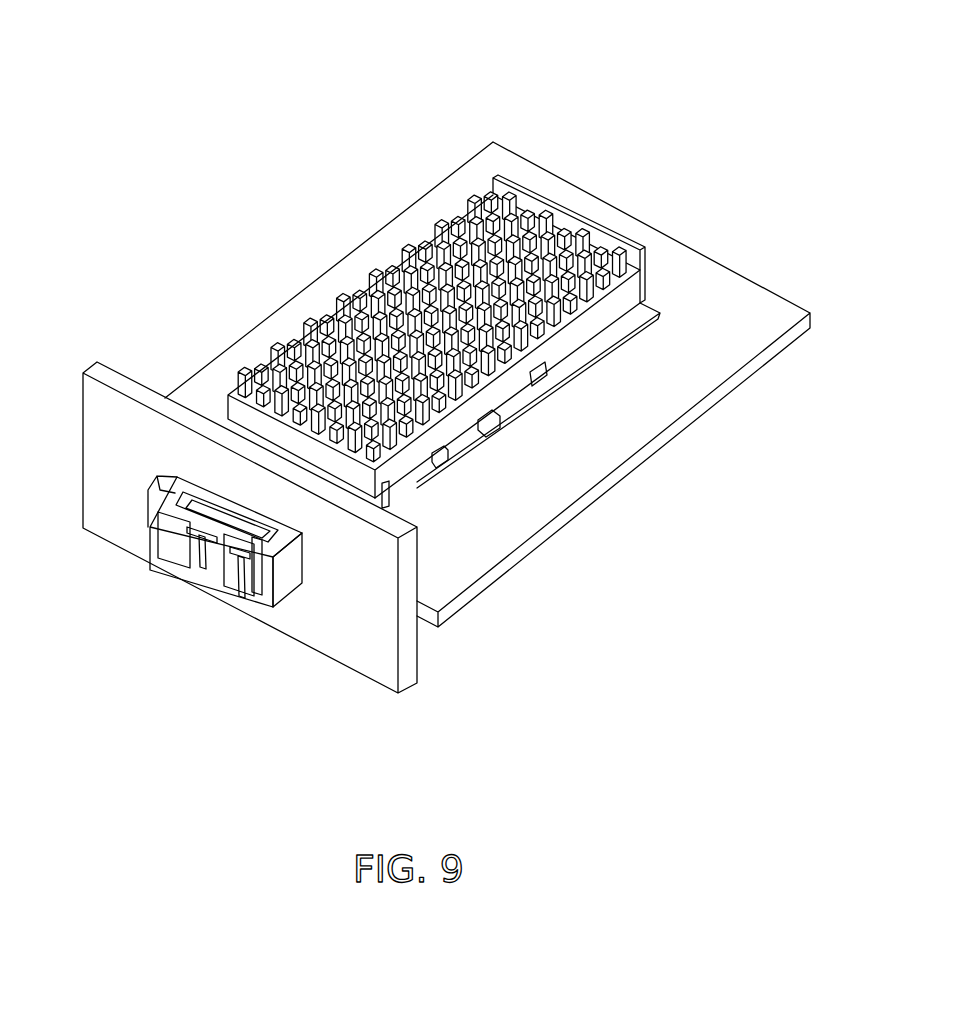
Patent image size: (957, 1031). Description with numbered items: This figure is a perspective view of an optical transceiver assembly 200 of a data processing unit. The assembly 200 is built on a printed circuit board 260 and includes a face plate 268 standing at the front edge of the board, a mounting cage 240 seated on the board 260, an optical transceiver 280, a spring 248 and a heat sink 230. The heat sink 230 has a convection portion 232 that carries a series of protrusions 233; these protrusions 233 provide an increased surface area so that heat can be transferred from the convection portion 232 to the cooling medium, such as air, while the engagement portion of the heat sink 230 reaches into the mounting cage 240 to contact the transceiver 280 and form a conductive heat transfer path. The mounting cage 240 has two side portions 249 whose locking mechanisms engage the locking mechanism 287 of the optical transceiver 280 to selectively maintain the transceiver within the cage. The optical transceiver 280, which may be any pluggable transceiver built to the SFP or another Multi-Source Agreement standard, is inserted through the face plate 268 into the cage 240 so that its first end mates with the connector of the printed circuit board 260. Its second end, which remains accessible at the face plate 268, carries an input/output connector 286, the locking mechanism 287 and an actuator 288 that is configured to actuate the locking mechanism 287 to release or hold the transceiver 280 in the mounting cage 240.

The optical transceiver assembly 200 is at (430, 391).
The heat sink 230 is at (513, 260).
The convection portion 232 is at (473, 265).
The protrusions 233 is at (447, 265).
The mounting cage 240 is at (652, 273).
The spring 248 is at (510, 377).
The side portions 249 is at (600, 320).
The printed circuit board 260 is at (707, 372).
The face plate 268 is at (117, 383).
The optical transceiver 280 is at (213, 627).
The input/output connector 286 is at (215, 583).
The locking mechanism 287 is at (290, 573).
The actuator 288 is at (203, 510).